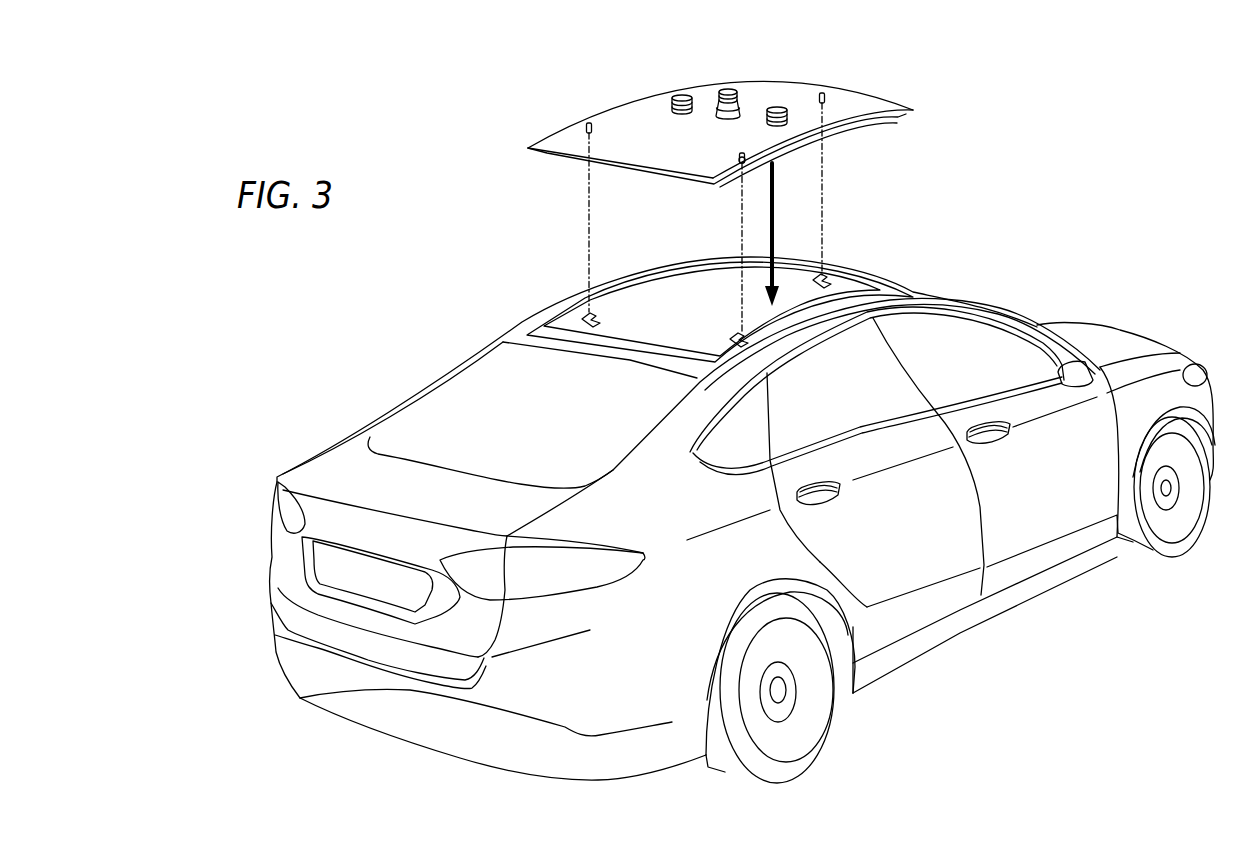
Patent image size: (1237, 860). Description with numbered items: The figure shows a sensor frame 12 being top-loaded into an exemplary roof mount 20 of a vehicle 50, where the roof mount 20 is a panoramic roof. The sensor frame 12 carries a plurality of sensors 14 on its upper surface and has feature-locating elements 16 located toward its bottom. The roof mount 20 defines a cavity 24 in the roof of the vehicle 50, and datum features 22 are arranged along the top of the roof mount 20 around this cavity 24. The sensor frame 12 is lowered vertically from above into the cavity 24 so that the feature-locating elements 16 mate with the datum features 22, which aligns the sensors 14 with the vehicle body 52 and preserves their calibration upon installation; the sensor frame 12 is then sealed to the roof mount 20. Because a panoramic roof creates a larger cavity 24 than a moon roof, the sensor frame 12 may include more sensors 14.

The sensor frame 12 is at (877, 90).
The sensors 14 is at (683, 95).
The feature-locating elements 16 is at (589, 121).
The roof mount 20 is at (627, 283).
The datum features 22 is at (588, 314).
The cavity 24 is at (727, 290).
The vehicle 50 is at (1027, 270).
The vehicle body 52 is at (900, 562).